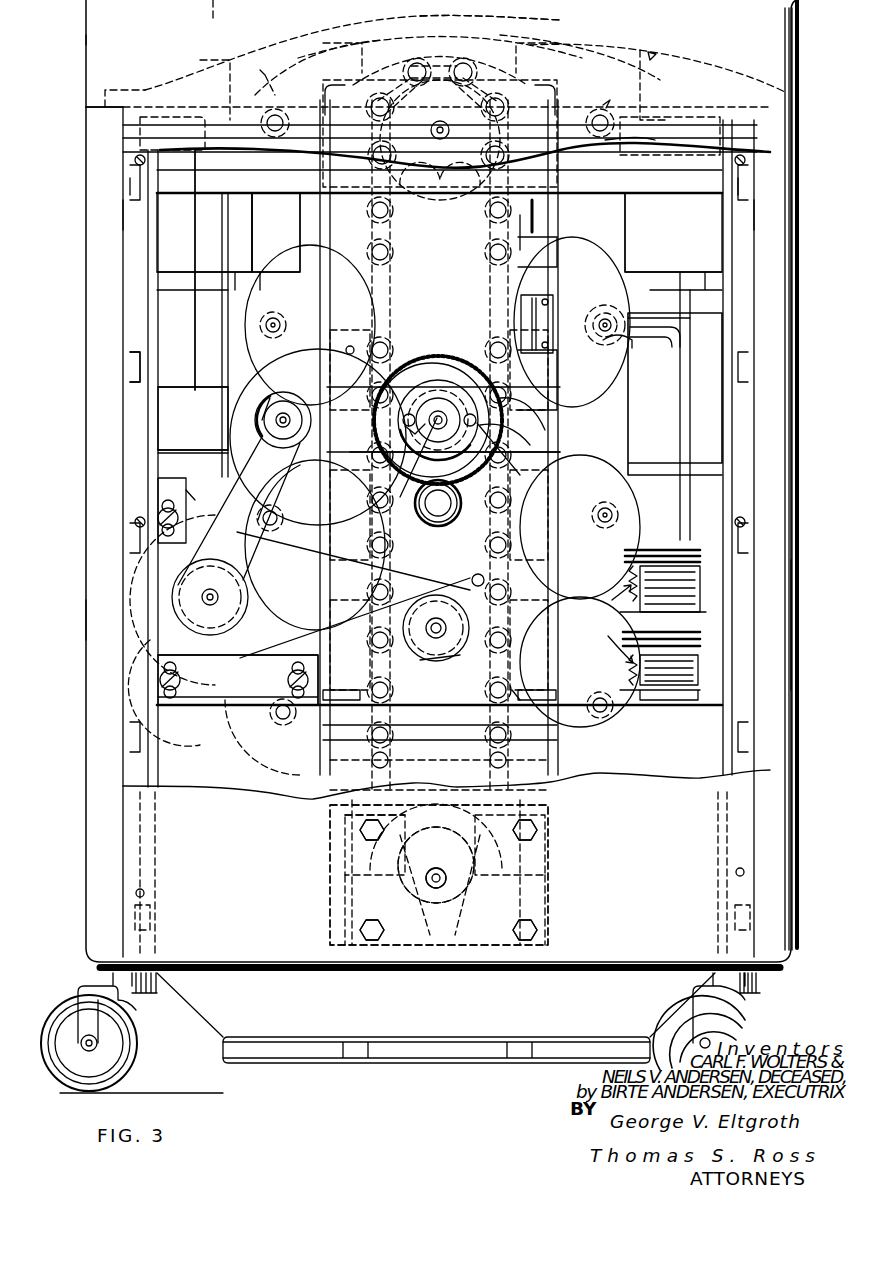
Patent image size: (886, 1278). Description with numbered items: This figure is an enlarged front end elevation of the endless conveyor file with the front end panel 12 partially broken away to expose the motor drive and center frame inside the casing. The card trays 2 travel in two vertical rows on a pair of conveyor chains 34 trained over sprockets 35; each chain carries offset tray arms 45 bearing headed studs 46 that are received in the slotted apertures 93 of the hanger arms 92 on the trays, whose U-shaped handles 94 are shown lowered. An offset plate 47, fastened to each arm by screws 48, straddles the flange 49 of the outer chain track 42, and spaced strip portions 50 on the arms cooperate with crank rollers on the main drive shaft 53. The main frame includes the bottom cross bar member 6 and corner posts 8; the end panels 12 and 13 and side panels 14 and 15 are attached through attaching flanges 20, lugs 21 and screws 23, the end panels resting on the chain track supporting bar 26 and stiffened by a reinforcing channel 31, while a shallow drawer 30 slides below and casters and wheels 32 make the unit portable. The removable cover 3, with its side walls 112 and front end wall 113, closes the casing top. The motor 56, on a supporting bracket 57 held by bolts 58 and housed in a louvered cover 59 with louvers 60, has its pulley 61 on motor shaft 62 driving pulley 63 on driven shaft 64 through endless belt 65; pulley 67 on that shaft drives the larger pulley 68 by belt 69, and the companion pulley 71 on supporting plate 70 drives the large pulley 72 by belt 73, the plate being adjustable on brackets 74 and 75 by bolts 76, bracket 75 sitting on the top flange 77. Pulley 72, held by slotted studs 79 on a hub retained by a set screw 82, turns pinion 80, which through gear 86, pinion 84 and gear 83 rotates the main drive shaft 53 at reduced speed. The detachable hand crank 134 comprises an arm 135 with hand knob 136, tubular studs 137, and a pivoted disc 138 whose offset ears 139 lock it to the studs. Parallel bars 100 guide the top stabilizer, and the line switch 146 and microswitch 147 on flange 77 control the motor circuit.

The card trays 2 is at (214, 250).
The removable cover 3 is at (805, 31).
The horizontal bottom cross bar member 6 is at (304, 1013).
The uprights or corner posts 8 is at (150, 368).
The front end panel 12 is at (226, 887).
The rear end panel 13 is at (226, 767).
The side panel 14 is at (190, 133).
The side panel 15 is at (791, 625).
The offset attaching flange 20 is at (135, 215).
The attaching lugs 21 is at (138, 183).
The screws 23 is at (135, 160).
The chain track supporting bar 26 is at (553, 32).
The shallow tray or drawer 30 is at (318, 1063).
The horizontally disposed reinforcing channel 31 is at (192, 430).
The casters and wheels 32 is at (118, 1056).
The conveyor chains 34 is at (490, 232).
The sprockets 35 is at (436, 185).
The outer chain track 42 is at (530, 230).
The offset tray arms 45 is at (270, 78).
The headed stud 46 is at (300, 315).
The offset plate 47 is at (560, 305).
The screws 48 is at (545, 290).
The flange 49 is at (550, 420).
The spaced parallel strip portions 50 is at (368, 345).
The main drive shaft 53 is at (400, 498).
The motor 56 is at (330, 875).
The supporting bracket 57 is at (345, 918).
The bolts 58 is at (345, 832).
The removable cover 59 is at (545, 833).
The louvers 60 is at (345, 898).
The pulley 61 is at (438, 842).
The motor shaft 62 is at (434, 890).
The pulley 63 is at (482, 587).
The driven shaft 64 is at (430, 635).
The endless belt 65 is at (400, 820).
The pulley 67 is at (436, 620).
The pulley 68 is at (255, 500).
The endless belt 69 is at (275, 515).
The supporting plate 70 is at (345, 578).
The pulley 71 is at (218, 590).
The pulley 72 is at (292, 392).
The endless belt 73 is at (258, 445).
The bracket 74 is at (165, 487).
The bracket 75 is at (200, 662).
The bolts 76 is at (160, 512).
The top flange 77 is at (212, 707).
The slotted studs 79 is at (412, 414).
The pinion 80 is at (465, 360).
The set screw 82 is at (442, 634).
The gear 83 is at (510, 438).
The pinion 84 is at (440, 527).
The gear 86 is at (482, 512).
The hanger arms 92 is at (262, 222).
The slotted aperture 93 is at (615, 365).
The U-shaped handles 94 is at (680, 345).
The spaced parallel bars 100 is at (205, 340).
The side walls 112 is at (820, 100).
The front end wall 113 is at (115, 40).
The hand crank 134 is at (312, 346).
The arm 135 is at (439, 445).
The hand knob 136 is at (270, 398).
The tubular studs 137 is at (375, 420).
The pivoted disc 138 is at (448, 395).
The offset ears 139 is at (418, 426).
The line switch 146 is at (603, 105).
The microswitch 147 is at (520, 700).